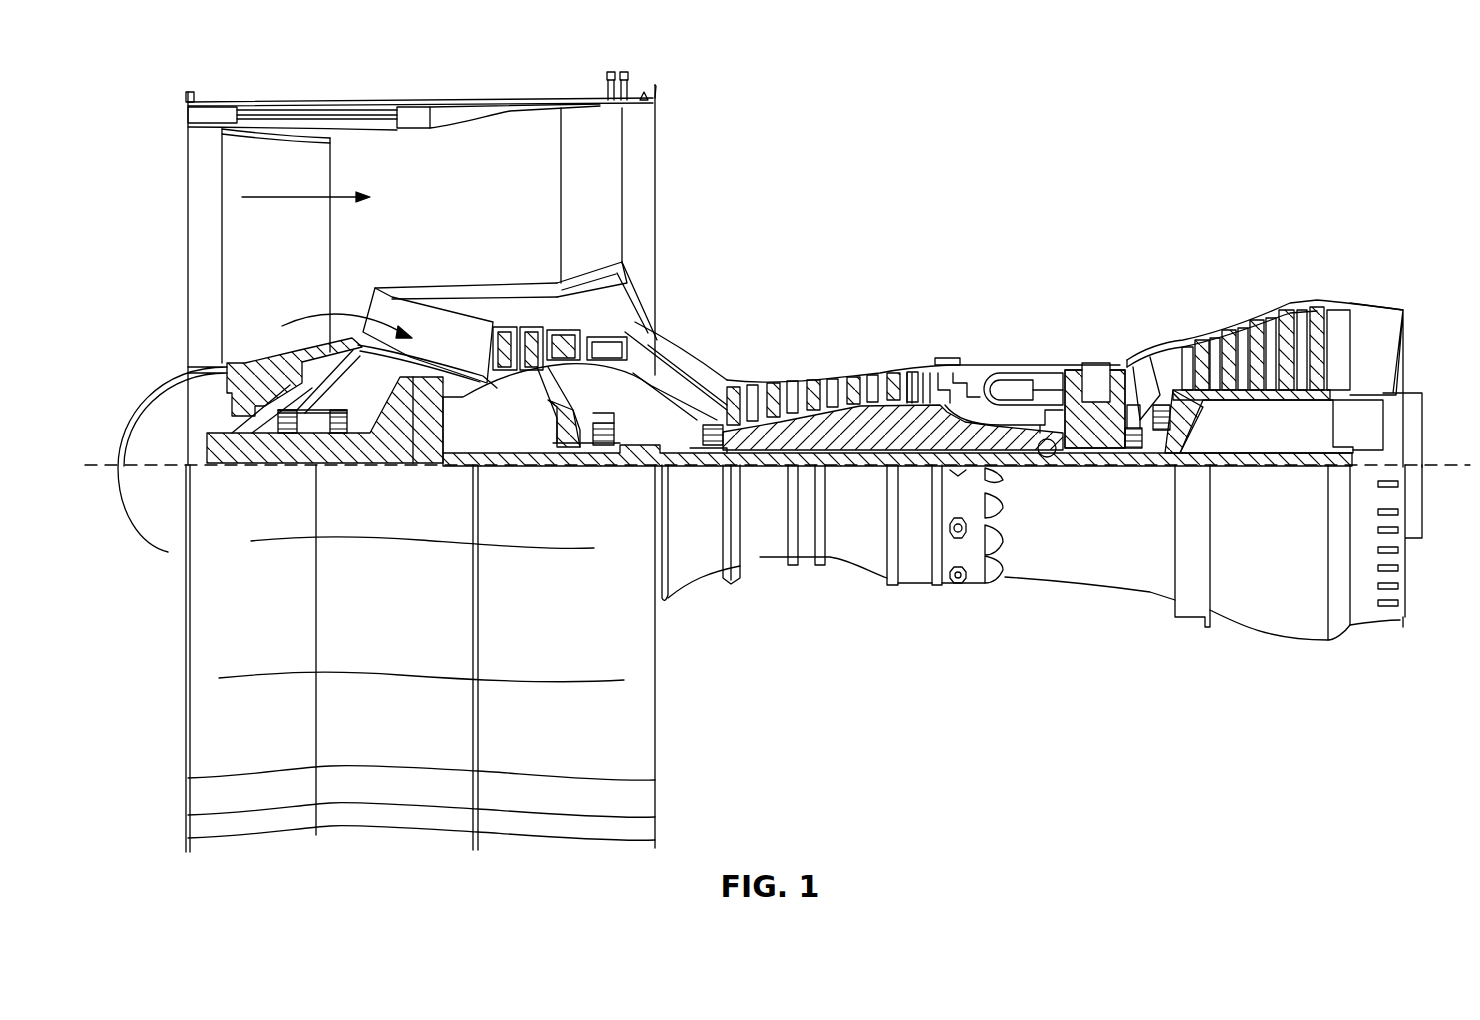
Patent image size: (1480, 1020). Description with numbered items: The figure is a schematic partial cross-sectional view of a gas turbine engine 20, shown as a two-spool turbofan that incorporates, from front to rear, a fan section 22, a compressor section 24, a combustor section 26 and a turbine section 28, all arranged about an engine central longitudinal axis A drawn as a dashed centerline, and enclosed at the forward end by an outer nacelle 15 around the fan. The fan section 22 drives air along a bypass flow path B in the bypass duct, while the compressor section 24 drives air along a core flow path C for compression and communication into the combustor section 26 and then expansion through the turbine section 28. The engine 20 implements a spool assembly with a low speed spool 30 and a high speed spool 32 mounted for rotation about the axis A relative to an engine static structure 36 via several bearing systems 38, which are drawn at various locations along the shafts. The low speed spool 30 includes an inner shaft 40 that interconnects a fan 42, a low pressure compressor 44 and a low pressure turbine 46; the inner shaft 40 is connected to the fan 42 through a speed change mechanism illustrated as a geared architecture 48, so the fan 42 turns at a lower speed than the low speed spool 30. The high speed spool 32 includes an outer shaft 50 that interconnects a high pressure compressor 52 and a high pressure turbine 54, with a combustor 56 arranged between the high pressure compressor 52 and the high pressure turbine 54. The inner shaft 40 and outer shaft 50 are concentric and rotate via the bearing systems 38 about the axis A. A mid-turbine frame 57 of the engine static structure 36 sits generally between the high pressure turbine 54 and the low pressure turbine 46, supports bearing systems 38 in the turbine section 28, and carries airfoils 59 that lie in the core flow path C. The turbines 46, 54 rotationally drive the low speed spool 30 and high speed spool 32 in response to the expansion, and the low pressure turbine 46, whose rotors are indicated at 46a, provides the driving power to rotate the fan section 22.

The nacelle 15 is at (426, 104).
The gas turbine engine 20 is at (1286, 74).
The fan section 22 is at (281, 96).
The compressor section 24 is at (727, 362).
The combustor section 26 is at (983, 284).
The turbine section 28 is at (1163, 262).
The low speed spool 30 is at (877, 474).
The high speed spool 32 is at (860, 415).
The engine static structure 36 is at (915, 592).
The bearing systems 38 is at (608, 445).
The inner shaft 40 is at (716, 448).
The fan 42 is at (255, 255).
The low pressure compressor 44 is at (548, 352).
The low pressure turbine 46 is at (1253, 312).
The turbine rotors 46a is at (1290, 305).
The geared architecture 48 is at (428, 435).
The outer shaft 50 is at (1050, 455).
The high pressure compressor 52 is at (813, 381).
The high pressure turbine 54 is at (1098, 372).
The combustor 56 is at (1012, 387).
The mid-turbine frame 57 is at (1145, 345).
The airfoils 59 is at (1186, 404).
The engine central longitudinal axis A is at (1432, 460).
The bypass flow path B is at (306, 196).
The core flow path C is at (310, 318).